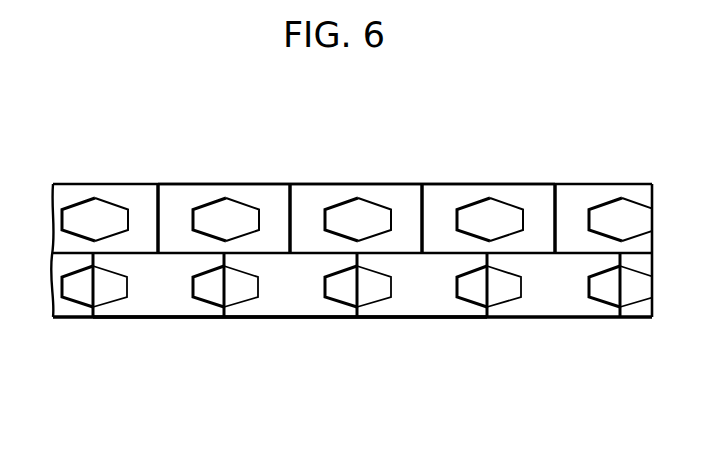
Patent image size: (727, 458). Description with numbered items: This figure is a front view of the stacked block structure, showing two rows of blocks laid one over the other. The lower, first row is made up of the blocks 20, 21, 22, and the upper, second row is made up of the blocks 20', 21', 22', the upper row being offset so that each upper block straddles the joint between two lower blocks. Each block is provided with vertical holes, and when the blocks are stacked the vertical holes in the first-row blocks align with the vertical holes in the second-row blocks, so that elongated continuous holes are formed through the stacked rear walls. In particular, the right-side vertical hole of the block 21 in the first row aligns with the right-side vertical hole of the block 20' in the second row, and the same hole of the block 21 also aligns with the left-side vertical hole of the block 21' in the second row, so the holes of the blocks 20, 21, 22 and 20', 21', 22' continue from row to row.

The block 20 is at (175, 311).
The block 21 is at (307, 311).
The block 22 is at (439, 311).
The block 20' is at (224, 198).
The block 21' is at (364, 198).
The block 22' is at (505, 192).